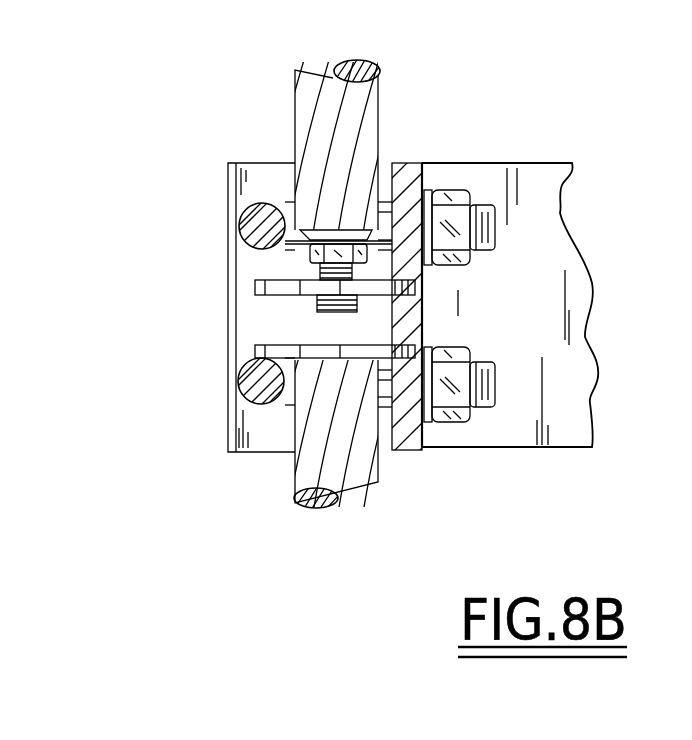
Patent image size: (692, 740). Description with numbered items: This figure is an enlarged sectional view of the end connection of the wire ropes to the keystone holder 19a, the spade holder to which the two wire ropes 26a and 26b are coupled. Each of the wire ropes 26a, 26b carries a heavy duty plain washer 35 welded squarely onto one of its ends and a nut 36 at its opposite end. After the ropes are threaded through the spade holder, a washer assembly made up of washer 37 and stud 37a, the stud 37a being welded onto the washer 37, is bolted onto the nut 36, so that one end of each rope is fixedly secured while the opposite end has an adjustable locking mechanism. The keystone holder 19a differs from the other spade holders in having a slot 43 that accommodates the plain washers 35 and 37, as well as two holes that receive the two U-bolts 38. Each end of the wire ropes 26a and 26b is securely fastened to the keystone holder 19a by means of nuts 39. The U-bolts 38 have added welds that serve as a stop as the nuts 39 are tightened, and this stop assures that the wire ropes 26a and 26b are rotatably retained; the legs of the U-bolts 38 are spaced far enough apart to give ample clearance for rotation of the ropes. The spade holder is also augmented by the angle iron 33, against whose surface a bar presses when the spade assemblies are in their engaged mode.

The keystone holder 19a is at (588, 398).
The wire rope 26a is at (300, 125).
The wire rope 26b is at (300, 484).
The angle iron 33 is at (236, 165).
The heavy duty plain washer 35 is at (400, 345).
The nut 36 is at (300, 260).
The washer 37 is at (272, 297).
The stud 37a is at (322, 308).
The U-bolt 38 is at (240, 222).
The nut 39 is at (458, 248).
The slot 43 is at (430, 301).